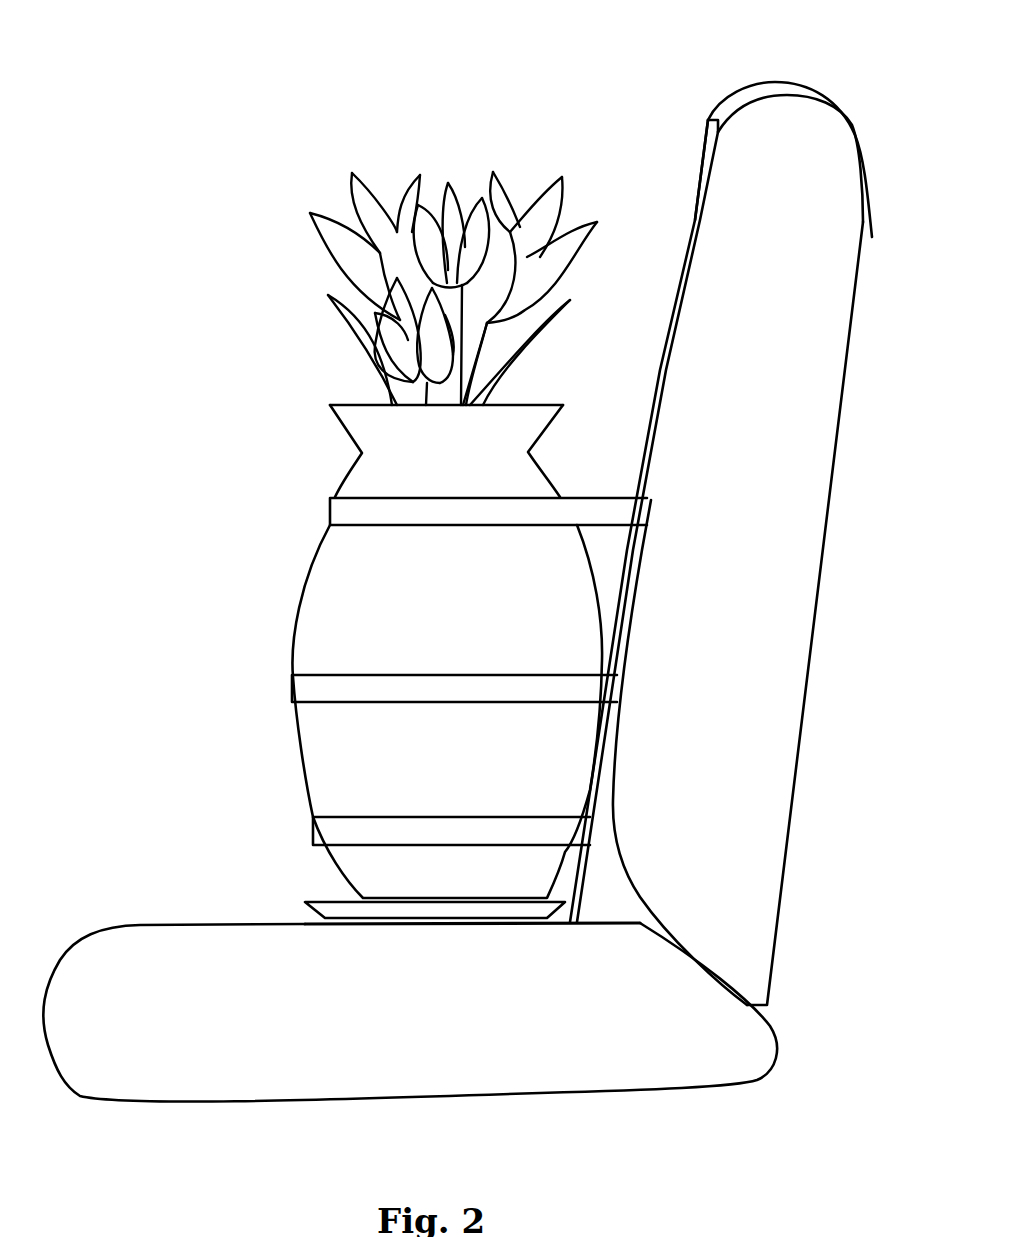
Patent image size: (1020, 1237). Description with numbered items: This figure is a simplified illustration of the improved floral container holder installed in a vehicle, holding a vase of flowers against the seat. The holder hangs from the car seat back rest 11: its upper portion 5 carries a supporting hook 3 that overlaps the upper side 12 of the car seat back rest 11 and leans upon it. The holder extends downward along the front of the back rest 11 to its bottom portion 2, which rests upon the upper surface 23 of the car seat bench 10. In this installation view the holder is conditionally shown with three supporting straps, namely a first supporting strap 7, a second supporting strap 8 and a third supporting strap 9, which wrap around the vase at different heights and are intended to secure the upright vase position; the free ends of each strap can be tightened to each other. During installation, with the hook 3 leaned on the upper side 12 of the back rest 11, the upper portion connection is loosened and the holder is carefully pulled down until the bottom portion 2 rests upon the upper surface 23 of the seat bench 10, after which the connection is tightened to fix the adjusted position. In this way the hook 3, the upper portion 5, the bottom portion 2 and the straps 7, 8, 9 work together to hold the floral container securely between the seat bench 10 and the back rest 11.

The bottom portion 2 is at (343, 912).
The first supporting hook 3 is at (813, 87).
The upper portion 5 is at (698, 133).
The first supporting strap 7 is at (443, 510).
The second supporting strap 8 is at (432, 687).
The third supporting strap 9 is at (440, 832).
The car seat bench 10 is at (567, 1068).
The car seat back rest 11 is at (810, 447).
The upper side of the car seat back rest 12 is at (760, 117).
The upper surface of the car seat bench 23 is at (283, 926).